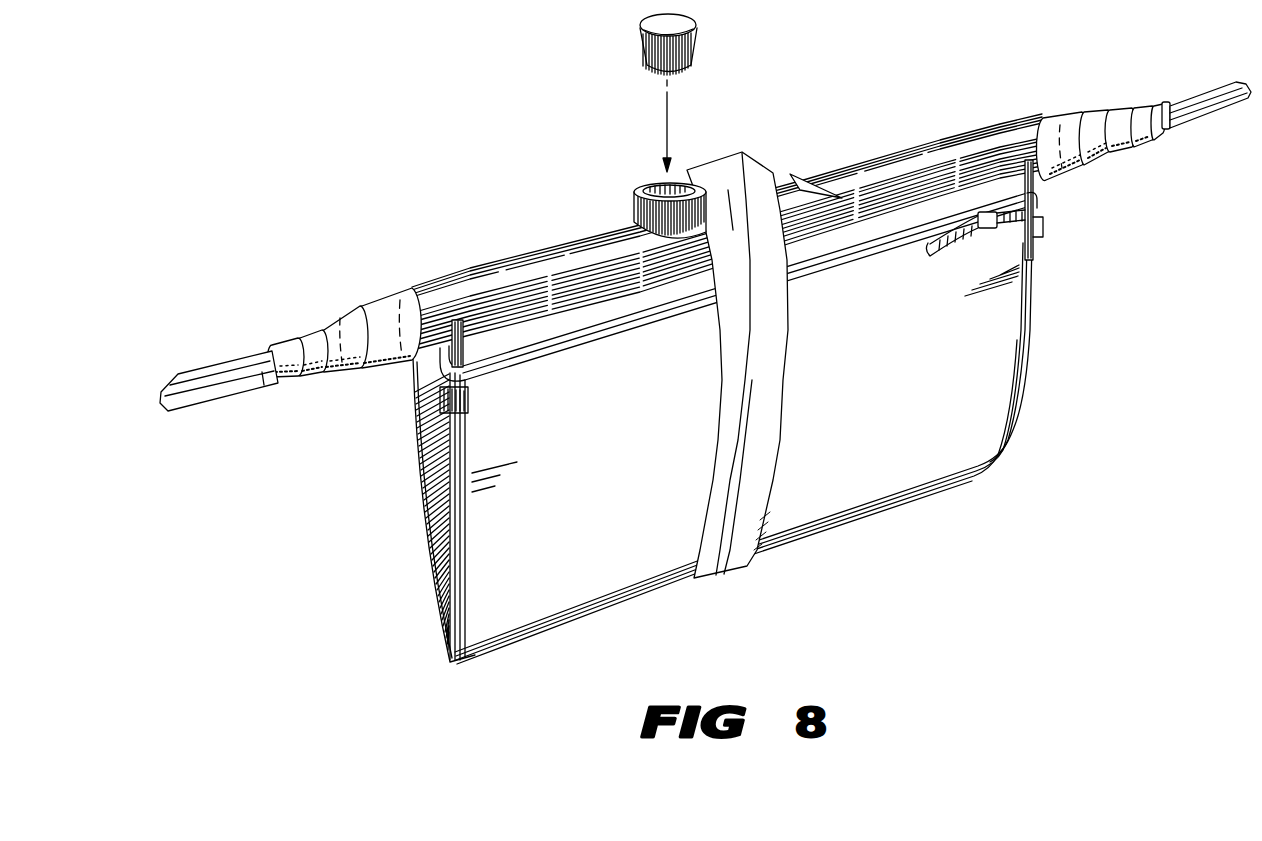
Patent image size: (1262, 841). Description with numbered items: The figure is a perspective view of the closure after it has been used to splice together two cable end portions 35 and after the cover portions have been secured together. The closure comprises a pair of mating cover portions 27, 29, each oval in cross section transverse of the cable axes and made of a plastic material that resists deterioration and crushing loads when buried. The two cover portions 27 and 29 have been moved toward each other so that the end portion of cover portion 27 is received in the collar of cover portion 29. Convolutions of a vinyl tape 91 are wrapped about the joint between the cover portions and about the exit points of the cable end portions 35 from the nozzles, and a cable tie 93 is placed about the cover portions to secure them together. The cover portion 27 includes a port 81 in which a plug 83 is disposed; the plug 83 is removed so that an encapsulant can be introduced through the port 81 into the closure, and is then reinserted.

The cover portion 27 is at (607, 606).
The cover portion 29 is at (858, 508).
The cable end portion 35 is at (212, 400).
The port 81 is at (648, 182).
The plug 83 is at (642, 65).
The vinyl tape 91 is at (307, 333).
The cable tie 93 is at (613, 333).